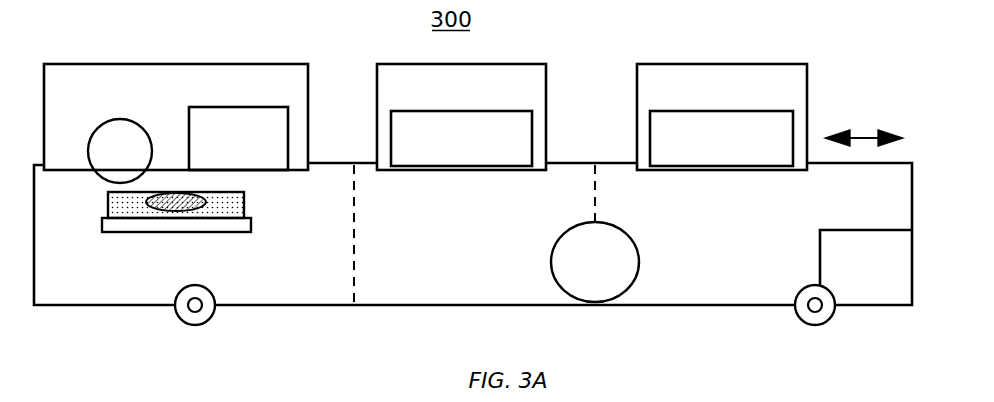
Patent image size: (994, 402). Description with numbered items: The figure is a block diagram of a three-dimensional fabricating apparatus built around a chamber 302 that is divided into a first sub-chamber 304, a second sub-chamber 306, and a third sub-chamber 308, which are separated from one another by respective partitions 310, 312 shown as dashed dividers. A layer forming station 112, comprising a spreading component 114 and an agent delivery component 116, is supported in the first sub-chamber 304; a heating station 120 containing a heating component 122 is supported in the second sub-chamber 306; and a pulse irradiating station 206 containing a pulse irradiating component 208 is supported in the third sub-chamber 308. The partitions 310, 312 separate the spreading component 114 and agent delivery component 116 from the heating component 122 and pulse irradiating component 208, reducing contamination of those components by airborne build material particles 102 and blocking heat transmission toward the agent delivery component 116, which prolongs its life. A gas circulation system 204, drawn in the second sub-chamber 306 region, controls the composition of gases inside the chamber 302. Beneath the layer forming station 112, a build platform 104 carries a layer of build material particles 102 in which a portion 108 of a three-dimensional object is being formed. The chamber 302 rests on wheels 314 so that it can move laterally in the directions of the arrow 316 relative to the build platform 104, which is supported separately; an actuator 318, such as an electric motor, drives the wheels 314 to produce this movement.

The chamber 302 is at (412, 305).
The first sub-chamber 304 is at (310, 294).
The second sub-chamber 306 is at (458, 294).
The third sub-chamber 308 is at (755, 296).
The partition 310 is at (354, 222).
The partition 312 is at (596, 197).
The wheels 314 is at (214, 310).
The arrow 316 is at (862, 138).
The actuator 318 is at (888, 280).
The layer forming station 112 is at (130, 99).
The spreading component 114 is at (112, 119).
The agent delivery component 116 is at (217, 143).
The heating station 120 is at (440, 99).
The heating component 122 is at (461, 138).
The pulse irradiating station 206 is at (700, 99).
The pulse irradiating component 208 is at (721, 138).
The gas circulation system 204 is at (616, 274).
The build material particles 102 is at (244, 212).
The build platform 104 is at (168, 233).
The portion of 3D object 108 is at (184, 211).